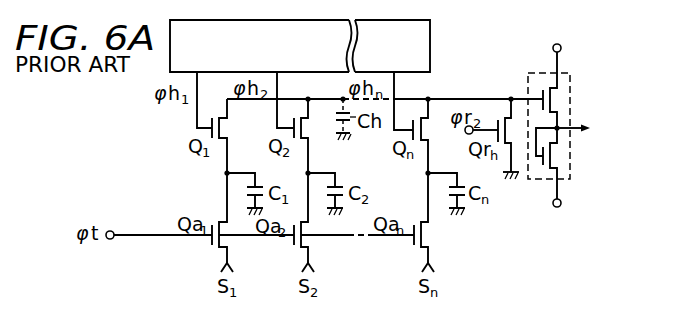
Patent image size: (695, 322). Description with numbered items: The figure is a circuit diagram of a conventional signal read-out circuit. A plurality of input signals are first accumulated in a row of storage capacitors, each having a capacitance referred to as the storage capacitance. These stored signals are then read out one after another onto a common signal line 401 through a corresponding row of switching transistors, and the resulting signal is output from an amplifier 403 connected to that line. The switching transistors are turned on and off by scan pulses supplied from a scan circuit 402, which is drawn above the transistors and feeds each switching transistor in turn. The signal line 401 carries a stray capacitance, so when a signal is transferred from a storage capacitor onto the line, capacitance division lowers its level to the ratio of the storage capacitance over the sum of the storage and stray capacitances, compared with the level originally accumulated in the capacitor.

The signal line 401 is at (478, 99).
The scan circuit 402 is at (430, 30).
The amplifier 403 is at (571, 91).